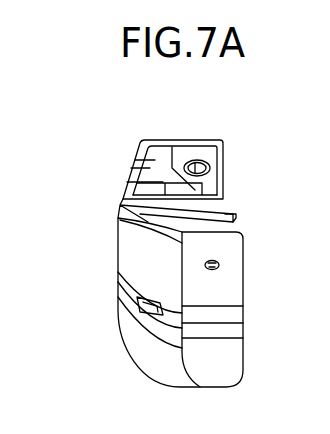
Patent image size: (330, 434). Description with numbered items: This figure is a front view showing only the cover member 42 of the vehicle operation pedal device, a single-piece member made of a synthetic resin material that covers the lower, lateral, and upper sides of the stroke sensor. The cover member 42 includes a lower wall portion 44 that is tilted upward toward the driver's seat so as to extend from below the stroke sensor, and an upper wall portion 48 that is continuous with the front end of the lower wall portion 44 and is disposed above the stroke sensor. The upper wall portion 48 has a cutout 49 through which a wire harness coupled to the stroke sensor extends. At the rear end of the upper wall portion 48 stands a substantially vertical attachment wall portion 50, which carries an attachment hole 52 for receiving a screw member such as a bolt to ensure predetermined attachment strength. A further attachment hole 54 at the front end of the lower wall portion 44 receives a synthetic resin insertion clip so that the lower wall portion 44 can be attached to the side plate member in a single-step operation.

The cover member 42 is at (92, 159).
The lower wall portion 44 is at (218, 343).
The upper wall portion 48 is at (126, 202).
The cutout 49 is at (233, 216).
The attachment wall portion 50 is at (194, 153).
The attachment hole 52 is at (212, 160).
The attachment hole 54 is at (219, 268).